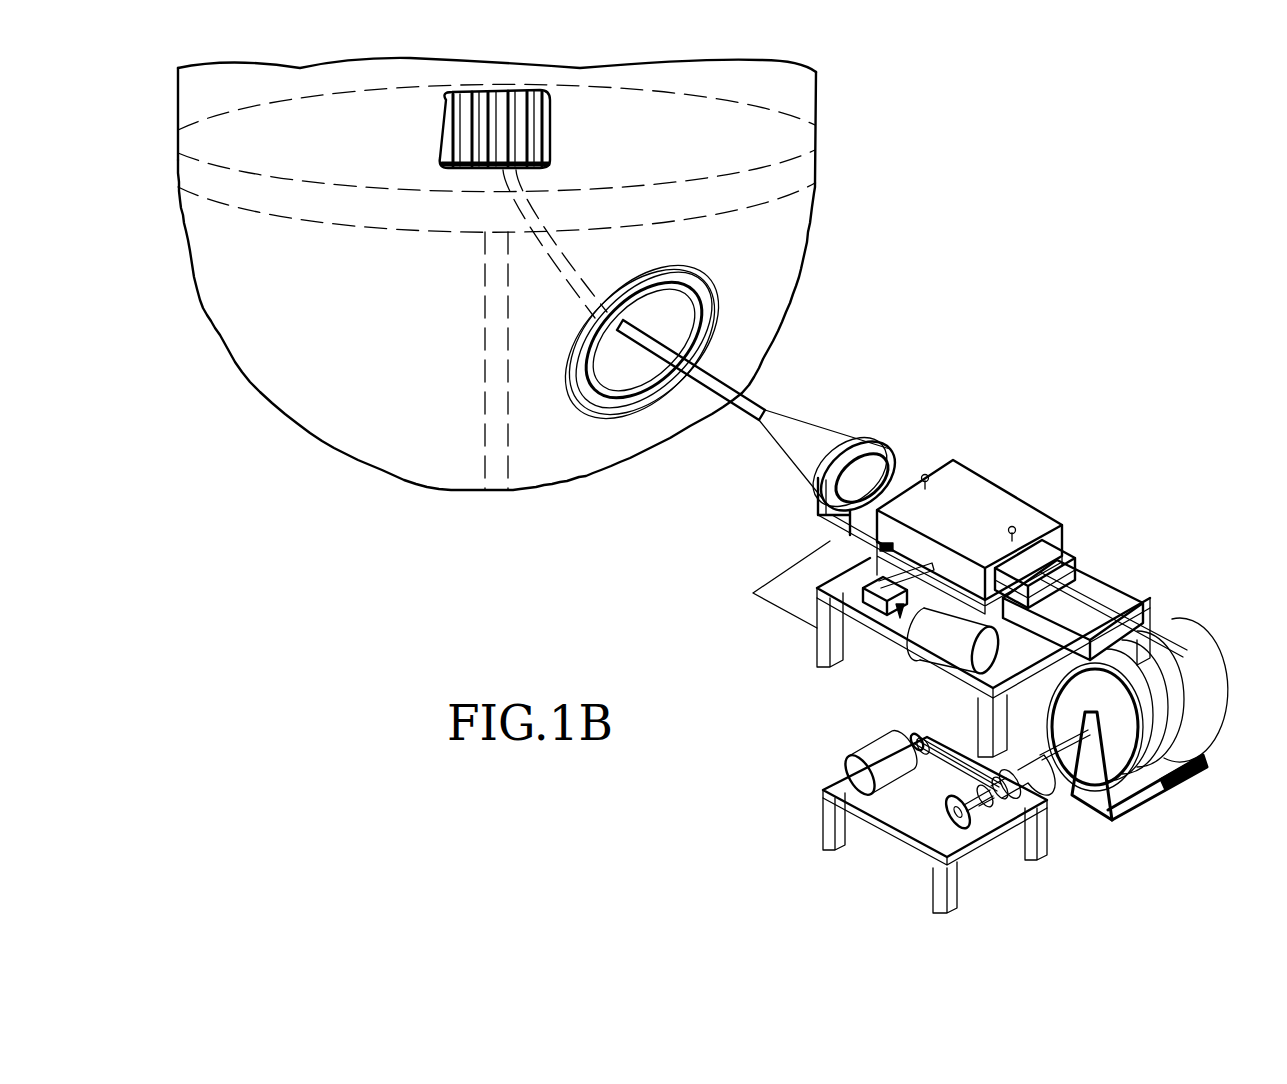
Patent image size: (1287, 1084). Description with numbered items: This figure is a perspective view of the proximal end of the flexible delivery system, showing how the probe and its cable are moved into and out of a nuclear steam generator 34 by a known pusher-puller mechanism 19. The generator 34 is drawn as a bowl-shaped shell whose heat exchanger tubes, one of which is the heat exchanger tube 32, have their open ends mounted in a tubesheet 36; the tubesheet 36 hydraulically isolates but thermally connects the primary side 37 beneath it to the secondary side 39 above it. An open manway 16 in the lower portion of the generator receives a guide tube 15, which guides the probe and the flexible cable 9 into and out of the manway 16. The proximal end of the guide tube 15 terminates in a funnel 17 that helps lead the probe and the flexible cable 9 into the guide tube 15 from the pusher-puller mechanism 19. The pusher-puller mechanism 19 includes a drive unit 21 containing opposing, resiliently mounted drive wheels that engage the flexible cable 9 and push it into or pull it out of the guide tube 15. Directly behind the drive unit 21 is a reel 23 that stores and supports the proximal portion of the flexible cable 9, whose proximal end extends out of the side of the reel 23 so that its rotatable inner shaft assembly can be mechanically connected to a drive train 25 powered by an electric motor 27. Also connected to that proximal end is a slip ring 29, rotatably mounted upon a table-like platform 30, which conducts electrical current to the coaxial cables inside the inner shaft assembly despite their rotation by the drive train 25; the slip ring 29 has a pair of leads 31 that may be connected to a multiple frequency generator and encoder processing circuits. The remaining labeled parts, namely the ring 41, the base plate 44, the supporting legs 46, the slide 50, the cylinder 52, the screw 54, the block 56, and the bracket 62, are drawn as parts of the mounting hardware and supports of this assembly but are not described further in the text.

The flexible cable 9 is at (1069, 778).
The guide tube 15 is at (631, 338).
The manway 16 is at (705, 297).
The funnel 17 is at (806, 432).
The pusher-puller mechanism 19 is at (1032, 533).
The drive unit 21 is at (967, 485).
The reel 23 is at (1213, 652).
The drive train 25 is at (959, 746).
The electric motor 27 is at (858, 775).
The slip ring 29 is at (952, 818).
The table-like platform 30 is at (838, 815).
The leads 31 is at (1010, 815).
The heat exchanger tube 32 is at (510, 132).
The nuclear steam generator 34 is at (848, 153).
The tubesheet 36 is at (818, 186).
The primary side 37 is at (805, 312).
The secondary side 39 is at (818, 96).
The opening 41 is at (704, 338).
The base plate 44 is at (838, 572).
The table legs 46 is at (822, 647).
The slide 50 is at (997, 606).
The cylinder 52 is at (942, 640).
The set screw rod 54 is at (885, 607).
The block 56 is at (838, 583).
The bracket 62 is at (820, 506).